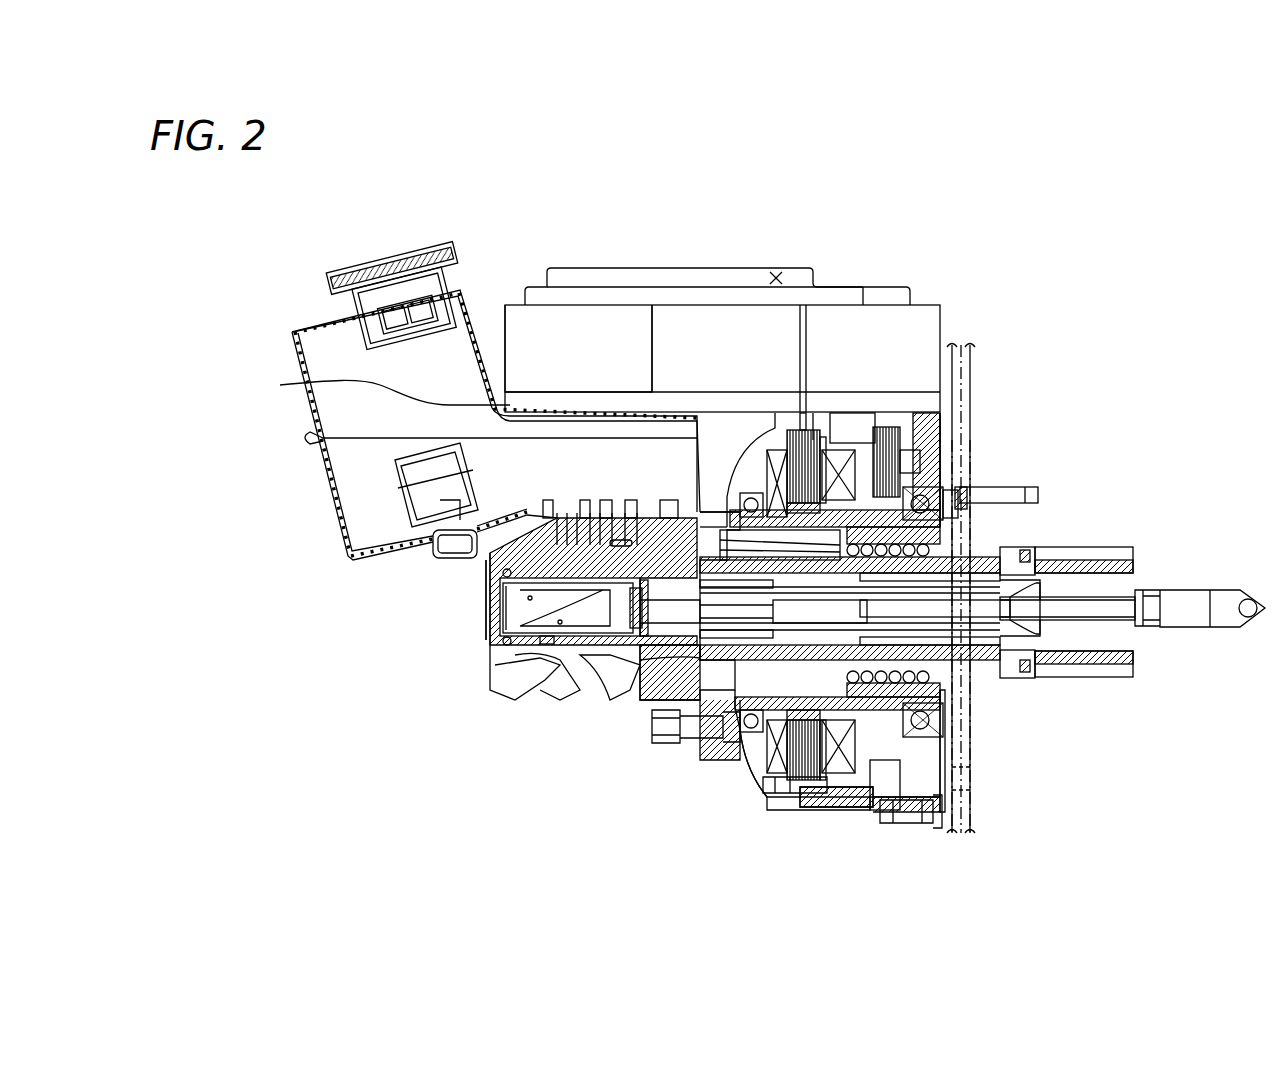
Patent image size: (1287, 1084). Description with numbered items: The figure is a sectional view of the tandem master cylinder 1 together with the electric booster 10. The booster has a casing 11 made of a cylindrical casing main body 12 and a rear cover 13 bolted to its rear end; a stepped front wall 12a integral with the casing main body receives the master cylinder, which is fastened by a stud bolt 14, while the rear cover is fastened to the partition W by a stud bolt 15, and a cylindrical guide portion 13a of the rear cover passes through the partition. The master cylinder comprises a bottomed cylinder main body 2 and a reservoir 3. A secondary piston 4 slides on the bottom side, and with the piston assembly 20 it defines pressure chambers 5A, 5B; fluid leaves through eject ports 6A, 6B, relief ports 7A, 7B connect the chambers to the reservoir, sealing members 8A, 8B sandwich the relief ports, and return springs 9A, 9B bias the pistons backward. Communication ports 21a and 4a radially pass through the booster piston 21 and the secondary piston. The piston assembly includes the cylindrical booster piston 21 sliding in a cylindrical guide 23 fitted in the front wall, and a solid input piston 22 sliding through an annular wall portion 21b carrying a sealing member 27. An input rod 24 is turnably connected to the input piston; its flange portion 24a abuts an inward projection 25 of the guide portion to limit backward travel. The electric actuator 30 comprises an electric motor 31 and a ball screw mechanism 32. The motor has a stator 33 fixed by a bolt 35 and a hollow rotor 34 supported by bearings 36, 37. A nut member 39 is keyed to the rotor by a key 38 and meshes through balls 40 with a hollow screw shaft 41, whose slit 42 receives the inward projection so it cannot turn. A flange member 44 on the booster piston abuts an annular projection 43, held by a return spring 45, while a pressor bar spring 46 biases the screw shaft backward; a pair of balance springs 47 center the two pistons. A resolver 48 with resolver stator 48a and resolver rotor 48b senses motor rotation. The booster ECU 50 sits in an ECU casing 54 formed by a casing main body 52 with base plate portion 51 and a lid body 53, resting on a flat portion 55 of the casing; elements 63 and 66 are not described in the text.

The tandem master cylinder 1 is at (466, 620).
The cylinder main body 2 is at (493, 590).
The reservoir 3 is at (323, 477).
The secondary piston 4 is at (590, 697).
The communication port 4a is at (507, 673).
The pressure chamber 5A is at (623, 680).
The pressure chamber 5B is at (570, 673).
The eject port 6A is at (578, 505).
The eject port 6B is at (492, 577).
The relief port 7A is at (637, 510).
The relief port 7B is at (563, 505).
The sealing member 8A is at (660, 700).
The sealing member 8B is at (543, 680).
The return spring 9A is at (603, 507).
The return spring 9B is at (483, 642).
The electric booster 10 is at (1090, 408).
The casing 11 is at (873, 820).
The casing main body 12 is at (907, 823).
The front wall 12a is at (710, 757).
The rear cover 13 is at (945, 445).
The cylindrical guide portion 13a is at (960, 540).
The stud bolt 14 is at (697, 750).
The stud bolt 15 is at (1032, 487).
The piston assembly 20 is at (802, 664).
The booster piston 21 is at (820, 853).
The communication port 21a is at (700, 660).
The annular wall portion 21b is at (810, 440).
The input piston 22 is at (807, 810).
The cylindrical guide 23 is at (720, 520).
The input rod 24 is at (1107, 607).
The flange portion 24a is at (1045, 625).
The inward projection 25 is at (1100, 600).
The sealing member 27 is at (790, 430).
The electric actuator 30 is at (887, 822).
The electric motor 31 is at (815, 440).
The ball screw mechanism 32 is at (950, 505).
The stator 33 is at (840, 797).
The rotor 34 is at (945, 700).
The bolt 35 is at (760, 793).
The bearing 36 is at (745, 720).
The bearing 37 is at (960, 730).
The key 38 is at (850, 800).
The nut member 39 is at (960, 550).
The balls 40 is at (905, 430).
The screw shaft 41 is at (990, 550).
The slit 42 is at (1117, 563).
The annular projection 43 is at (1040, 600).
The flange member 44 is at (1130, 657).
The return spring 45 is at (970, 545).
The pressor bar spring 46 is at (667, 710).
The balance springs 47 is at (950, 680).
The resolver 48 is at (1010, 786).
The resolver stator 48a is at (970, 803).
The resolver rotor 48b is at (991, 767).
The booster ECU 50 is at (736, 258).
The base plate portion 51 is at (282, 385).
The casing main body 52 is at (547, 313).
The lid body 53 is at (606, 275).
The ECU casing 54 is at (965, 330).
The flat portion 55 is at (825, 430).
The resolver 63 is at (875, 440).
The bearing 66 is at (900, 440).
The partition W is at (972, 813).